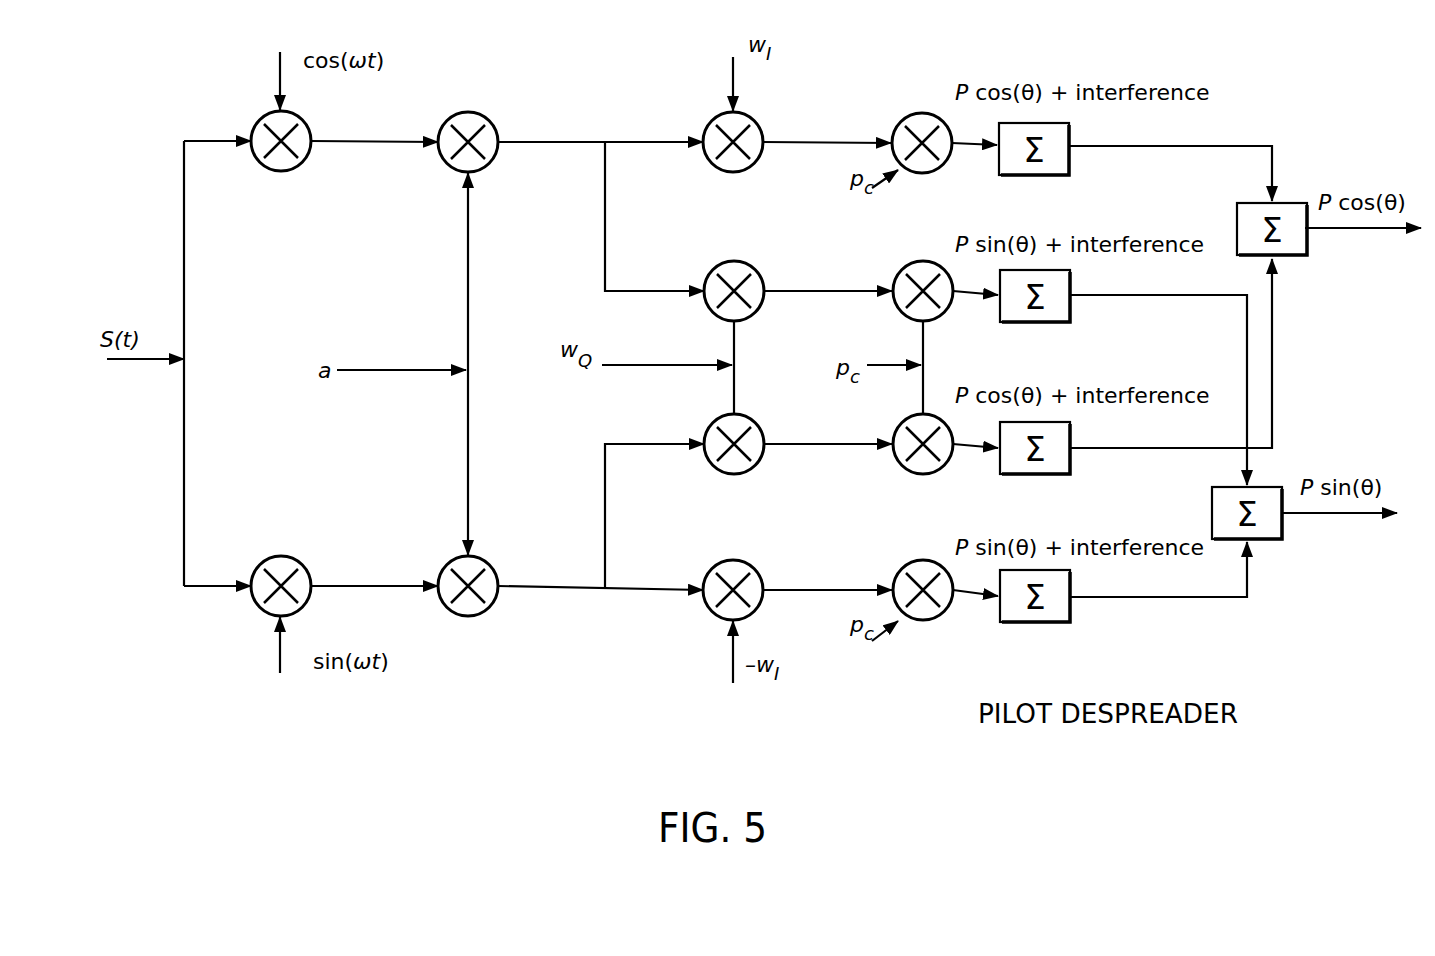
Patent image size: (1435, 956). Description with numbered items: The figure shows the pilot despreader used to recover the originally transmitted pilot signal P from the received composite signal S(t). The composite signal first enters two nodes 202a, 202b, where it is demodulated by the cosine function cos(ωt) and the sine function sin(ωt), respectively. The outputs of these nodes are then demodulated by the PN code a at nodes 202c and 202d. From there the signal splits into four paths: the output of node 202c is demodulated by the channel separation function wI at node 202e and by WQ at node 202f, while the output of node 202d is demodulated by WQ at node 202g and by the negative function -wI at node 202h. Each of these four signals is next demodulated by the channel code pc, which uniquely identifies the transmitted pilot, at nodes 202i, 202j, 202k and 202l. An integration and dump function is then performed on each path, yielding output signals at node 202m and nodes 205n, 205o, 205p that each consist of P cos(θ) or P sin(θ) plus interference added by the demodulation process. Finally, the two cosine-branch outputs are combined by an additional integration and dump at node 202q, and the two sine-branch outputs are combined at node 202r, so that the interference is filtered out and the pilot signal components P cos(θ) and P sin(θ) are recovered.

The node 202a is at (300, 164).
The node 202b is at (300, 563).
The node 202c is at (487, 119).
The node 202d is at (487, 563).
The node 202e is at (714, 119).
The node 202f is at (716, 267).
The node 202g is at (711, 424).
The node 202h is at (714, 566).
The node 202i is at (903, 120).
The node 202j is at (908, 265).
The node 202k is at (914, 474).
The node 202l is at (915, 620).
The node 202m is at (1073, 178).
The node 205n is at (1073, 324).
The node 205o is at (1073, 476).
The node 205p is at (1073, 624).
The node 202q is at (1307, 258).
The node 202r is at (1283, 541).